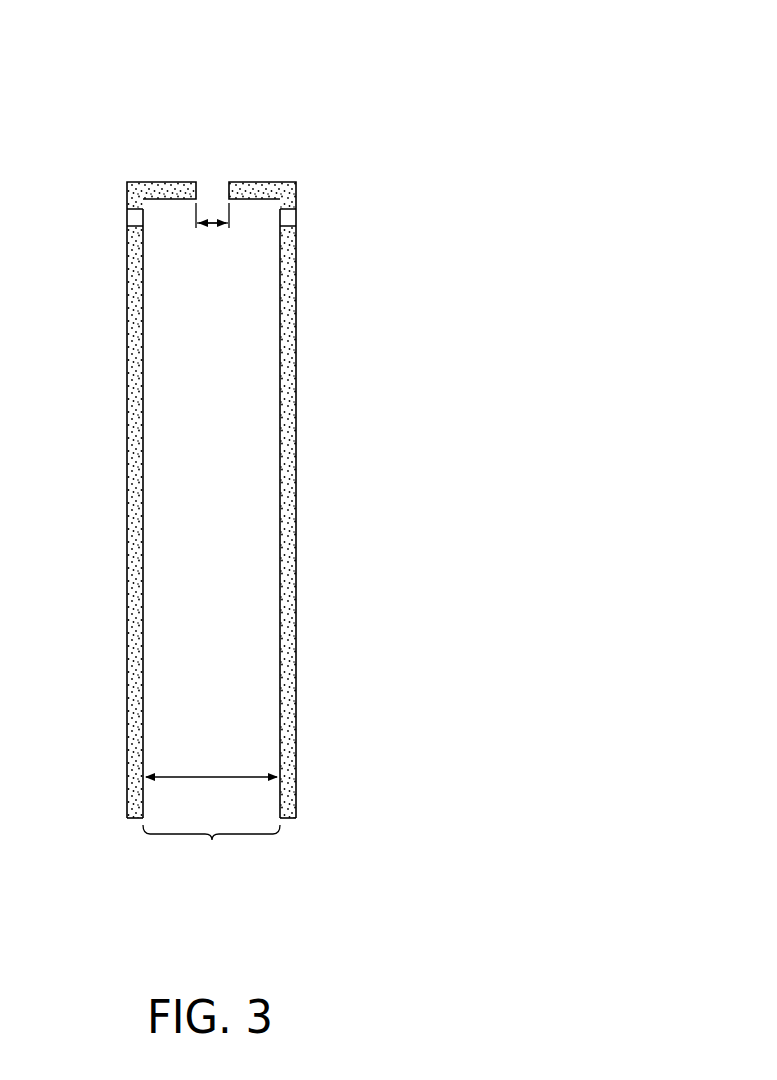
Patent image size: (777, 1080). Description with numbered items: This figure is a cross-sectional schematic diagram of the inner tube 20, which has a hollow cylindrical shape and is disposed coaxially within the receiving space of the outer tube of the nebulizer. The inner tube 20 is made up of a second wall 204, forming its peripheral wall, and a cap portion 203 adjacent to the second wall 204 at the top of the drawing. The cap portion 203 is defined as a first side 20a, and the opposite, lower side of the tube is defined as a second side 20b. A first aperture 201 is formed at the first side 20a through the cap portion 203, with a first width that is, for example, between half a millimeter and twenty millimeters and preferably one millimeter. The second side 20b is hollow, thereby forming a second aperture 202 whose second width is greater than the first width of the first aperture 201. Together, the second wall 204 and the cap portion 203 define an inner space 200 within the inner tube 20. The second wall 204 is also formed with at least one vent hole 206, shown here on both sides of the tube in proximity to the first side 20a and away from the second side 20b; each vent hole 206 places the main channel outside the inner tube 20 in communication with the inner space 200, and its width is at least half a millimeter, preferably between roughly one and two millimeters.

The inner tube 20 is at (316, 153).
The first side 20a is at (305, 190).
The second side 20b is at (306, 810).
The inner space 200 is at (257, 518).
The first aperture 201 is at (230, 190).
The second aperture 202 is at (203, 843).
The cap portion 203 is at (162, 182).
The second wall 204 is at (133, 496).
The vent hole 206 is at (133, 218).